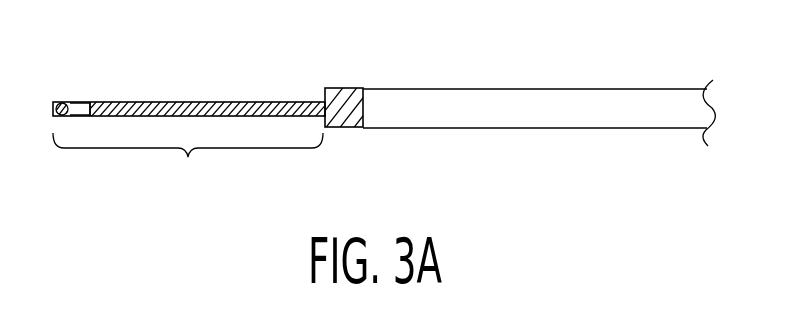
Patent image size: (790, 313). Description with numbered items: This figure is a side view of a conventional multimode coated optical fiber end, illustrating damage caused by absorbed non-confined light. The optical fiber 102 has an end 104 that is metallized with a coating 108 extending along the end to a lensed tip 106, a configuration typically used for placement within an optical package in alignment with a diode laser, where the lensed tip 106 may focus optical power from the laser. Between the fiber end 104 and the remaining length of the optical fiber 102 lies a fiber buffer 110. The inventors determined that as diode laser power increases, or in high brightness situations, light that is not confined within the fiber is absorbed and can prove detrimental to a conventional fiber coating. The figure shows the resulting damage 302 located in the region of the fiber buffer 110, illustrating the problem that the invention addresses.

The optical fiber 102 is at (530, 89).
The fiber end 104 is at (188, 164).
The lensed tip 106 is at (62, 102).
The metallized coating 108 is at (248, 100).
The fiber buffer 110 is at (348, 88).
The damage 302 is at (365, 128).